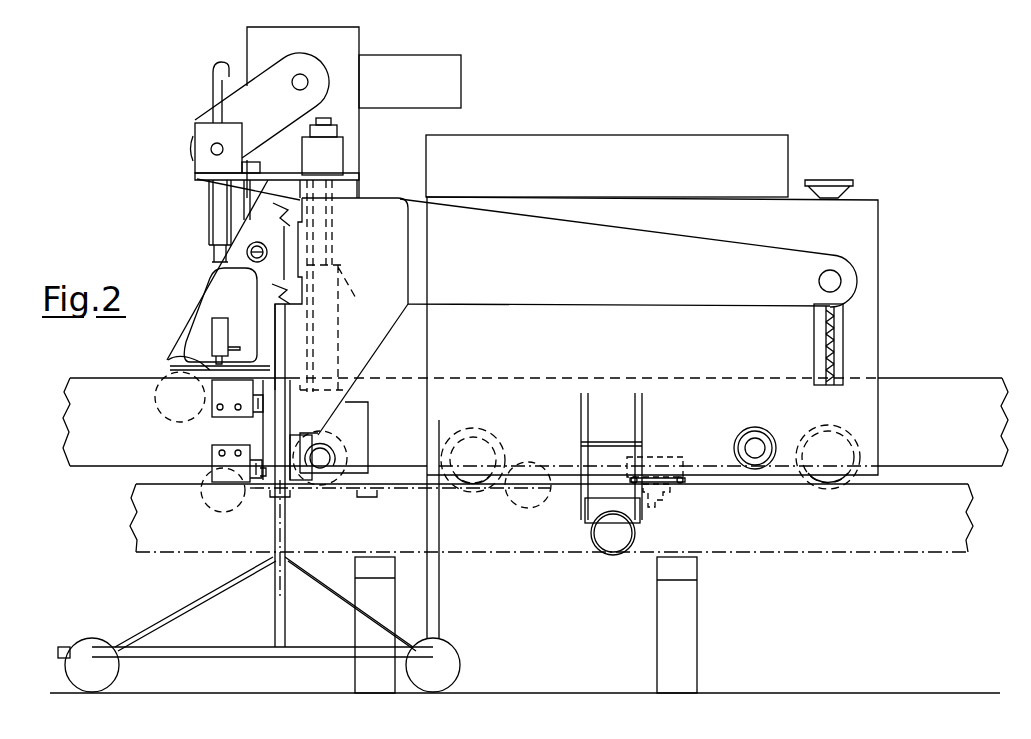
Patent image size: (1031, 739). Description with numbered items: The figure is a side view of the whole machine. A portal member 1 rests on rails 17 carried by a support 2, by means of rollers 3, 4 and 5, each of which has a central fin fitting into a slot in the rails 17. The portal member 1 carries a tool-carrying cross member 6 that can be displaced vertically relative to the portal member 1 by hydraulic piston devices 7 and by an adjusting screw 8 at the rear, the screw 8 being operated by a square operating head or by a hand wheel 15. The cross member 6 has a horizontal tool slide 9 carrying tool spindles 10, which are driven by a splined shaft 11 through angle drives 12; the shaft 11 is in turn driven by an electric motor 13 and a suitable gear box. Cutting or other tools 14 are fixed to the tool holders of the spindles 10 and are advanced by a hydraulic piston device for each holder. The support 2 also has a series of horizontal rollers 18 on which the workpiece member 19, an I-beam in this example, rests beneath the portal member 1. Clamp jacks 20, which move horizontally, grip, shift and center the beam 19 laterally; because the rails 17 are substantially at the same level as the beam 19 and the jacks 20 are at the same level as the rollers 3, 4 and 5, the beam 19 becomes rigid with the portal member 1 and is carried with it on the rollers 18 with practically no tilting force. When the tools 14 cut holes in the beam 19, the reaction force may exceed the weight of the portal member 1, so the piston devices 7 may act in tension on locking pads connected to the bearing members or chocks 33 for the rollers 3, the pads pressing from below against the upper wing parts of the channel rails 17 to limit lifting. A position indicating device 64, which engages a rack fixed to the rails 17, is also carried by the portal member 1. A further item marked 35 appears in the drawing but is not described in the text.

The portal member 1 is at (337, 155).
The support 2 is at (362, 628).
The roller 3 is at (343, 478).
The roller 4 is at (498, 476).
The roller 5 is at (808, 486).
The tool-carrying cross member 6 is at (380, 266).
The hydraulic piston device 7 is at (335, 355).
The adjusting screw 8 is at (836, 330).
The horizontal tool slide 9 is at (281, 284).
The tool spindle 10 is at (215, 332).
The splined shaft 11 is at (212, 150).
The angle drive 12 is at (208, 137).
The electric motor 13 is at (337, 53).
The cutting tool 14 is at (170, 356).
The hand wheel 15 is at (826, 178).
The rail 17 is at (150, 520).
The horizontal roller 18 is at (210, 478).
The workpiece member 19 is at (105, 452).
The clamp jack 20 is at (748, 447).
The bearing member or chock 33 is at (357, 424).
The roller 35 is at (178, 403).
The position indicating device 64 is at (608, 543).